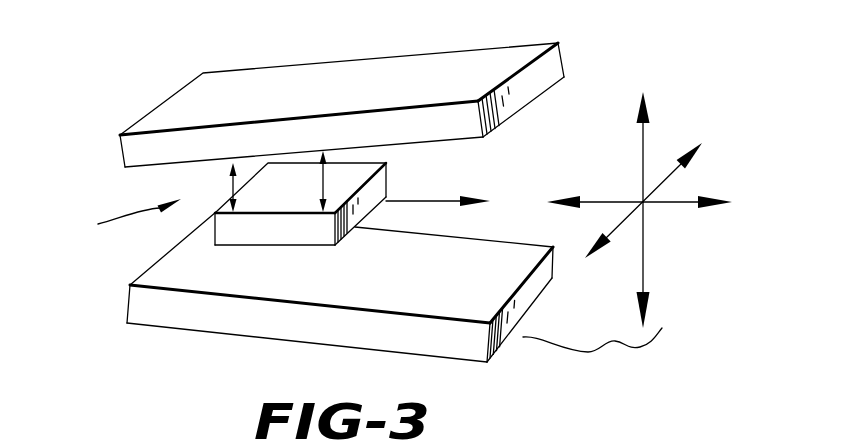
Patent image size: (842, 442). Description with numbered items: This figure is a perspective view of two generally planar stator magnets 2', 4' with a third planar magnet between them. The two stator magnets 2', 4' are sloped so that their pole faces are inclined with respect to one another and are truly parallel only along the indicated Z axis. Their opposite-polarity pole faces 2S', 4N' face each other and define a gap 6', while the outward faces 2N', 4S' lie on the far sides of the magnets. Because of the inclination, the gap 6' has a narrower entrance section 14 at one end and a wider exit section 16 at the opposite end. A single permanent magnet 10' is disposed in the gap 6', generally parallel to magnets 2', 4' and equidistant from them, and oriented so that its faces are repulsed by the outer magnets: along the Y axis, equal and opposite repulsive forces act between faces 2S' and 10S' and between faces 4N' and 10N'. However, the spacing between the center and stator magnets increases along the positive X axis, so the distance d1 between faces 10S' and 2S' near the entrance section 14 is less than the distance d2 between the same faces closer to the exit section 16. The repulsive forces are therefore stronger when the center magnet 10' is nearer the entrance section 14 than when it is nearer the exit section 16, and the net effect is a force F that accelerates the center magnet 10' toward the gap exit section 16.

The stator magnet 2' is at (332, 105).
The north pole face of stator magnet 2N' is at (339, 87).
The south pole face of stator magnet 2S' is at (282, 168).
The stator magnet 4' is at (320, 304).
The north pole face of stator magnet 4N' is at (310, 267).
The south pole face of stator magnet 4S' is at (307, 346).
The single permanent magnet 10' is at (309, 184).
The south pole face of single permanent magnet 10S' is at (309, 166).
The north pole face of single permanent magnet 10N' is at (309, 267).
The gap 6' is at (127, 220).
The entrance section 14 is at (167, 230).
The exit section 16 is at (455, 158).
The distance between faces near gap entrance d1 is at (231, 191).
The distance between faces near gap exit d2 is at (321, 191).
The force F is at (420, 202).